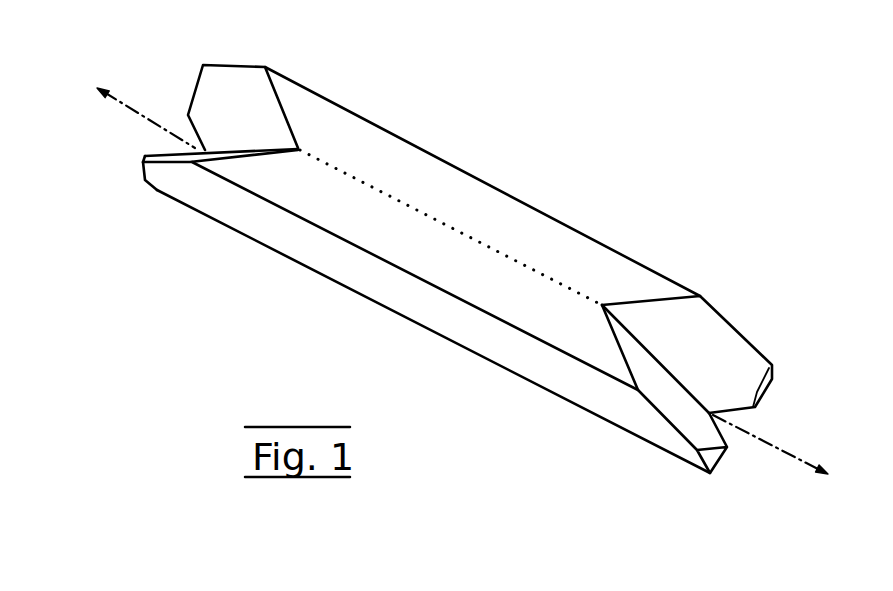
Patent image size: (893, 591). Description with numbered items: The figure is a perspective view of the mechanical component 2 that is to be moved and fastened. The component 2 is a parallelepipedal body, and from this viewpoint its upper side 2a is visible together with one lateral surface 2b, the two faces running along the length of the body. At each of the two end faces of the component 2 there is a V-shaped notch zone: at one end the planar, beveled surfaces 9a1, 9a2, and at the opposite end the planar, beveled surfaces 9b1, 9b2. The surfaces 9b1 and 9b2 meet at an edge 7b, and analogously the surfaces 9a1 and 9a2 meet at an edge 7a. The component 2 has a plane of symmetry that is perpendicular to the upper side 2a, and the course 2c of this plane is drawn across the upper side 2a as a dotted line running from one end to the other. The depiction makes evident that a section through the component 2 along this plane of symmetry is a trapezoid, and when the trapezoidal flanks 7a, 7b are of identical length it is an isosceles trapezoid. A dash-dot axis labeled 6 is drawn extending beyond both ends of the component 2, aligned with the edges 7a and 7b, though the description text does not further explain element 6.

The mechanical component 2 is at (631, 183).
The upper side 2a is at (404, 167).
The lateral surface 2b is at (456, 326).
The course of the plane of symmetry 2c is at (472, 237).
The axis of rotation 6 is at (127, 108).
The edge 7a is at (228, 150).
The edge 7b is at (662, 367).
The V-shaped notch zone 9a1 is at (243, 116).
The V-shaped notch zone 9a2 is at (190, 157).
The V-shaped notch zone 9b1 is at (697, 332).
The V-shaped notch zone 9b2 is at (683, 410).